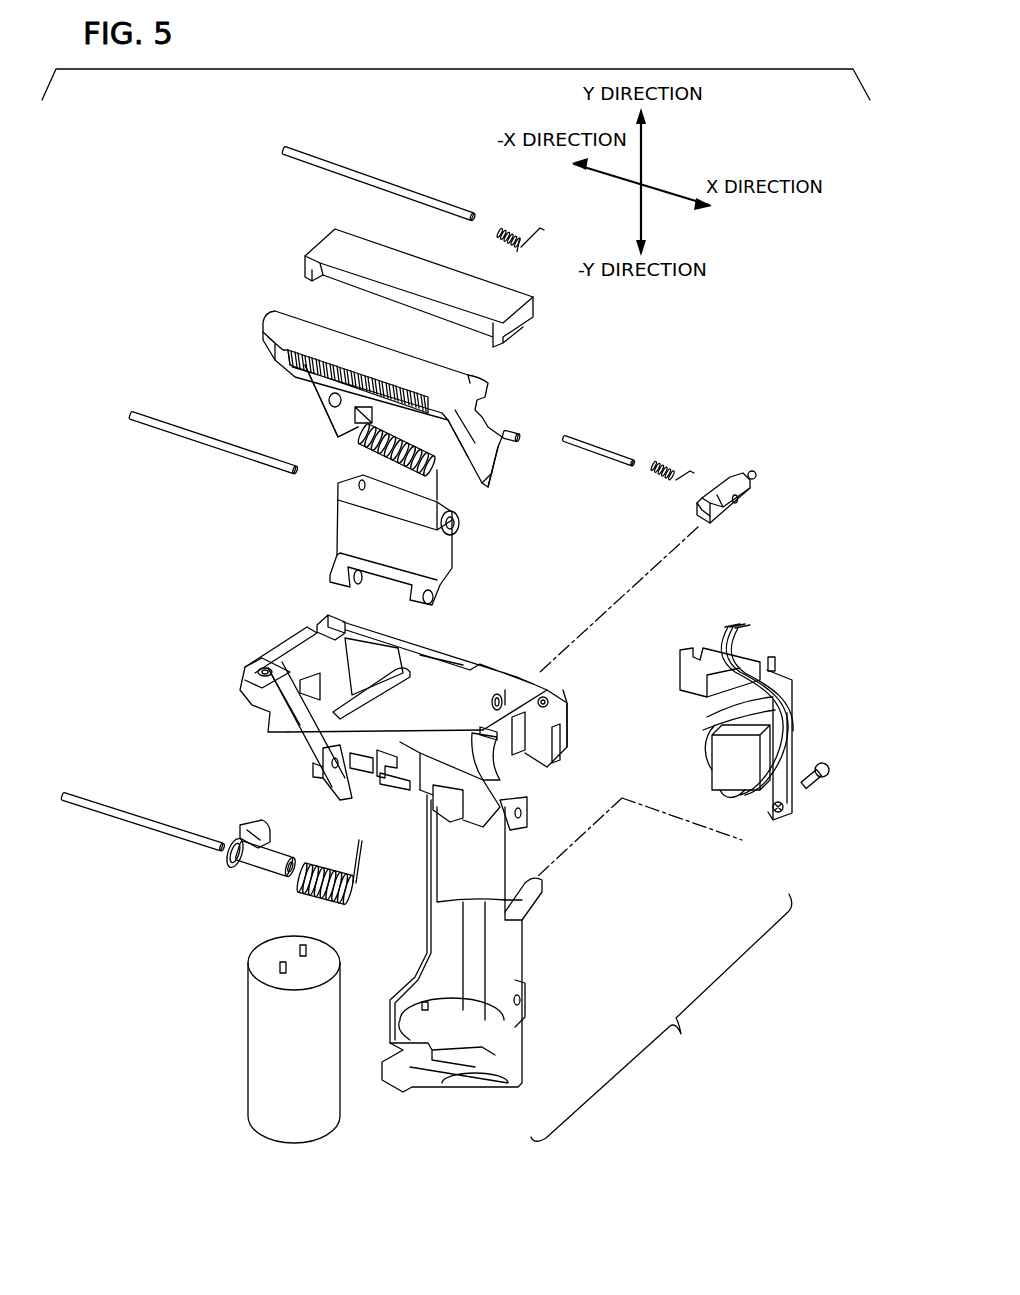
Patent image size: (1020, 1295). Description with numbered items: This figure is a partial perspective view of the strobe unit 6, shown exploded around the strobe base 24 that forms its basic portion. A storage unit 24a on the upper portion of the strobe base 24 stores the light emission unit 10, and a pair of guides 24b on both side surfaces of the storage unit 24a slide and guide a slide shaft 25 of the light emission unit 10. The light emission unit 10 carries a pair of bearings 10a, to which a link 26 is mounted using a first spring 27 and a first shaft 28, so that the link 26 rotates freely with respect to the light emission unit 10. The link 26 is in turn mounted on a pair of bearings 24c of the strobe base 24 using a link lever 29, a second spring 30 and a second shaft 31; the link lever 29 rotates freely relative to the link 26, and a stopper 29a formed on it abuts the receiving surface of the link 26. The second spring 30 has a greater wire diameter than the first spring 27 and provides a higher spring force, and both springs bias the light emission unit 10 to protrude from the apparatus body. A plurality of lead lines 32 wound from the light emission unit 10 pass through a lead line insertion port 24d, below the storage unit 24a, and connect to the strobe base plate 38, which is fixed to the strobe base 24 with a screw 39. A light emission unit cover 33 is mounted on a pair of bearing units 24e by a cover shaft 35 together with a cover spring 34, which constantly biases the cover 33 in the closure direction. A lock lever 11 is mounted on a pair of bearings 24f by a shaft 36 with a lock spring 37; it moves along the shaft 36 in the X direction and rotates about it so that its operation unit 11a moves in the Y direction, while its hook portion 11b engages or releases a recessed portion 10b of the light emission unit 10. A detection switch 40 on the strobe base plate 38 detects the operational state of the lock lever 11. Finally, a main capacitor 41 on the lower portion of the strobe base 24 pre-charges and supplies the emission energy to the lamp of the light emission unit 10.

The strobe unit 6 is at (661, 1017).
The light emission unit 10 is at (285, 322).
The bearing 10a is at (415, 428).
The recessed portion 10b is at (490, 480).
The lock lever 11 is at (727, 478).
The operation unit 11a is at (757, 477).
The hook portion 11b is at (697, 503).
The strobe base 24 is at (480, 955).
The storage unit 24a is at (445, 670).
The guide 24b is at (350, 730).
The bearing 24c is at (420, 790).
The lead line insertion port 24d is at (500, 755).
The bearing unit 24e is at (318, 622).
The bearing 24f is at (505, 700).
The slide shaft 25 is at (512, 438).
The link 26 is at (345, 530).
The first spring 27 is at (362, 445).
The first shaft 28 is at (186, 443).
The link lever 29 is at (225, 857).
The stopper 29a is at (258, 836).
The second spring 30 is at (320, 900).
The second shaft 31 is at (140, 822).
The lead line 32 is at (715, 637).
The light emission unit cover 33 is at (305, 245).
The cover spring 34 is at (505, 230).
The cover shaft 35 is at (342, 165).
The shaft 36 is at (598, 450).
The lock spring 37 is at (665, 465).
The strobe base plate 38 is at (795, 752).
The screw 39 is at (814, 790).
The detection switch 40 is at (774, 658).
The main capacitor 41 is at (260, 1060).